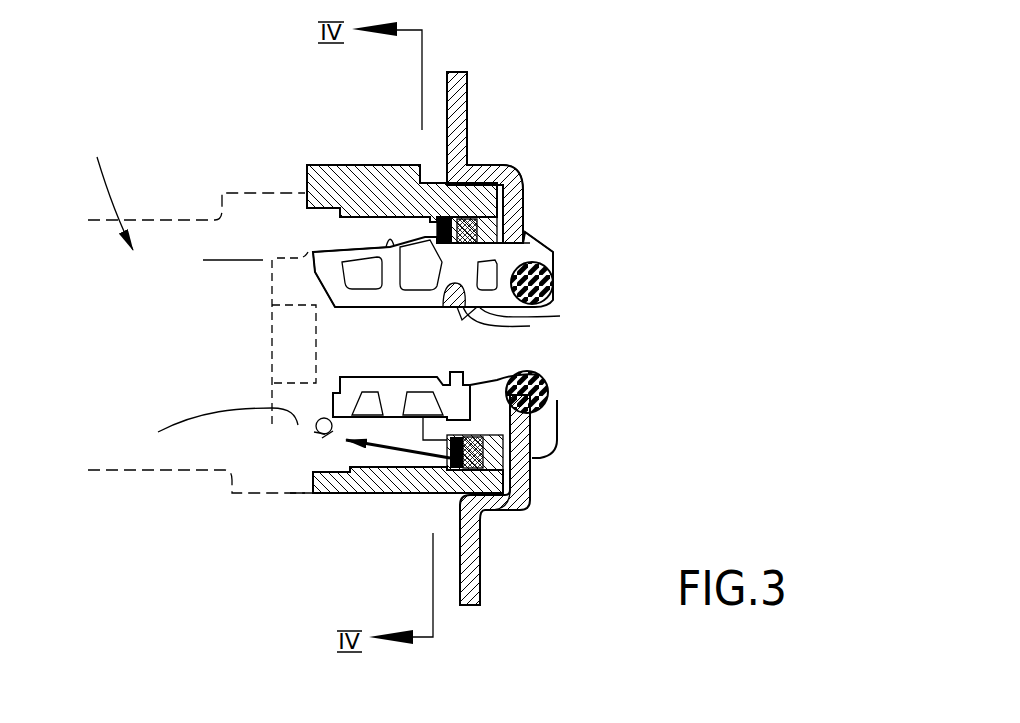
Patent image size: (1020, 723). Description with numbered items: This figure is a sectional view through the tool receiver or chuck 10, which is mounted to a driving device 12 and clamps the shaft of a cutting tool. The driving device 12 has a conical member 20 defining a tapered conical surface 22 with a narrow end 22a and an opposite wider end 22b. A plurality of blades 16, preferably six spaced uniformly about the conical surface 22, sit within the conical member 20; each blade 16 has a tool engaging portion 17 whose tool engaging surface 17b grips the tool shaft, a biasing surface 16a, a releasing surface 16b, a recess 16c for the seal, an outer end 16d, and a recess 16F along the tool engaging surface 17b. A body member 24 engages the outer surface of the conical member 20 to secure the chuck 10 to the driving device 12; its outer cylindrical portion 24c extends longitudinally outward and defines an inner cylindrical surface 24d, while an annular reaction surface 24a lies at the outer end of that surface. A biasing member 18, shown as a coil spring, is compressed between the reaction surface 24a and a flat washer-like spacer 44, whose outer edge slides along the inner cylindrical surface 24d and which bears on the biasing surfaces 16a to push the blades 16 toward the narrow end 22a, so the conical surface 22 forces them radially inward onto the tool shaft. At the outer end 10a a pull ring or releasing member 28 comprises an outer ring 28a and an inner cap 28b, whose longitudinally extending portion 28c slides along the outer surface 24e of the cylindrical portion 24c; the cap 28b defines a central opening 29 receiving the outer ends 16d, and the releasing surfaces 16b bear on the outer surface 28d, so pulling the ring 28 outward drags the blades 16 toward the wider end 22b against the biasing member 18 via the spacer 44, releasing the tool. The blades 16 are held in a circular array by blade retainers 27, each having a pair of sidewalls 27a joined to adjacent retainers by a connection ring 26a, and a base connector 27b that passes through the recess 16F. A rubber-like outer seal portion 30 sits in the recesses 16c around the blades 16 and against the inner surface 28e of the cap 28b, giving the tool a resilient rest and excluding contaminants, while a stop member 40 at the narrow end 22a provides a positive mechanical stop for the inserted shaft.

The tool receiver 10 is at (162, 102).
The outer end of tool receiver 10a is at (476, 614).
The driving device 12 is at (103, 191).
The blades 16 is at (437, 222).
The biasing surface 16a is at (337, 290).
The releasing surface 16b is at (548, 232).
The recess 16c is at (554, 268).
The outer end of blades 16d is at (526, 240).
The recess 16F is at (460, 308).
The flange 17 is at (500, 312).
The tool engaging surface 17b is at (520, 320).
The biasing member 18 is at (522, 193).
The conical member 20 is at (282, 444).
The conical surface 22 is at (312, 268).
The narrow end 22a is at (279, 433).
The wider end 22b is at (390, 240).
The body member 24 is at (307, 167).
The annular reaction surface 24a is at (532, 474).
The outer cylindrical portion 24c is at (430, 190).
The inner cylindrical surface 24d is at (432, 222).
The outer surface 24e is at (430, 163).
The connection ring 26a is at (317, 428).
The blade retainers 27 is at (332, 432).
The sidewalls 27a is at (350, 490).
The base connector 27b is at (530, 326).
The pull ring 28 is at (474, 123).
The outer ring 28a is at (469, 97).
The inner cap 28b is at (523, 210).
The longitudinally extending portion 28c is at (509, 165).
The outer surface of pull ring 28d is at (508, 228).
The inner surface of cap 28e is at (556, 402).
The opening 29 is at (535, 247).
The outer seal portion 30 is at (554, 284).
The stop member 40 is at (289, 353).
The spacer 44 is at (468, 222).